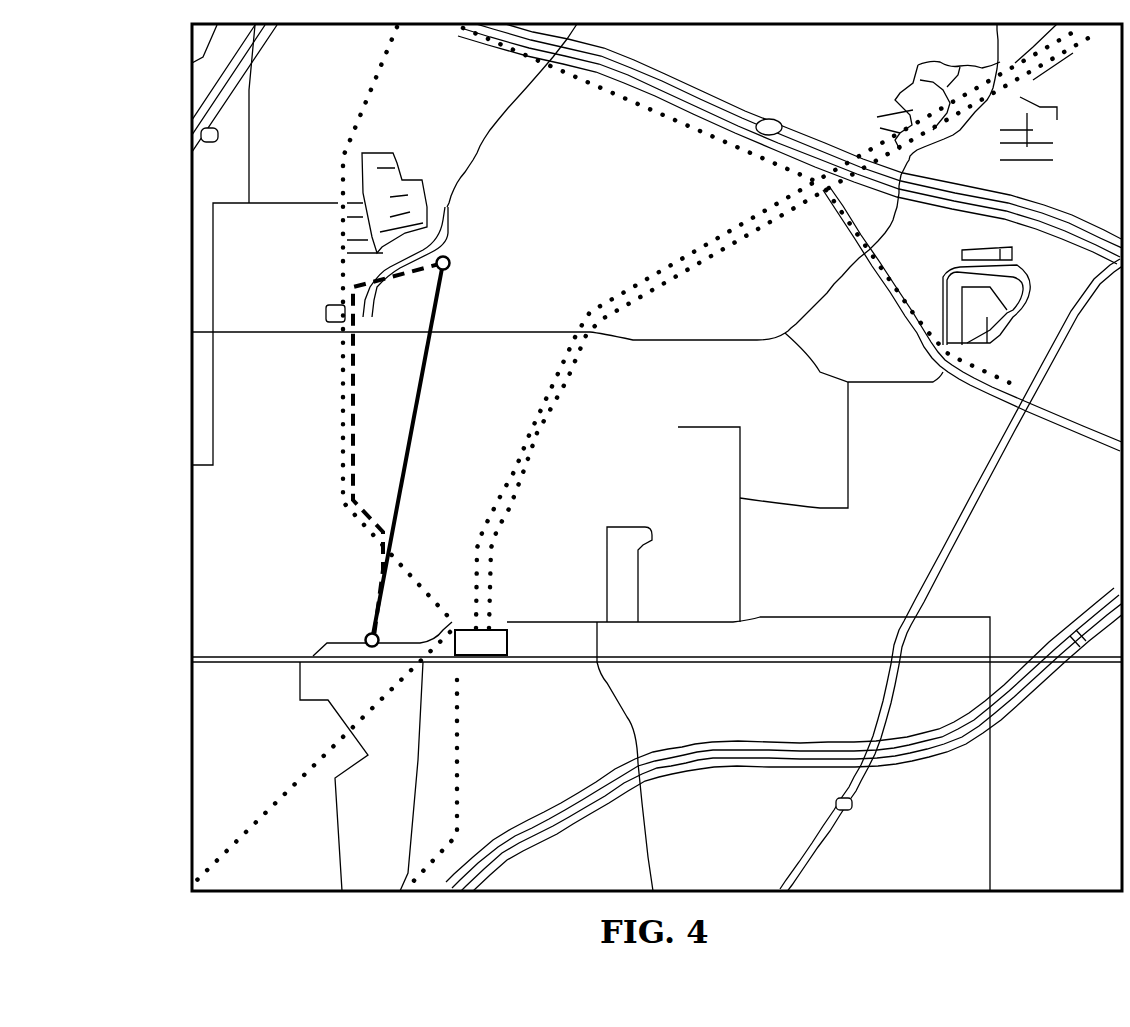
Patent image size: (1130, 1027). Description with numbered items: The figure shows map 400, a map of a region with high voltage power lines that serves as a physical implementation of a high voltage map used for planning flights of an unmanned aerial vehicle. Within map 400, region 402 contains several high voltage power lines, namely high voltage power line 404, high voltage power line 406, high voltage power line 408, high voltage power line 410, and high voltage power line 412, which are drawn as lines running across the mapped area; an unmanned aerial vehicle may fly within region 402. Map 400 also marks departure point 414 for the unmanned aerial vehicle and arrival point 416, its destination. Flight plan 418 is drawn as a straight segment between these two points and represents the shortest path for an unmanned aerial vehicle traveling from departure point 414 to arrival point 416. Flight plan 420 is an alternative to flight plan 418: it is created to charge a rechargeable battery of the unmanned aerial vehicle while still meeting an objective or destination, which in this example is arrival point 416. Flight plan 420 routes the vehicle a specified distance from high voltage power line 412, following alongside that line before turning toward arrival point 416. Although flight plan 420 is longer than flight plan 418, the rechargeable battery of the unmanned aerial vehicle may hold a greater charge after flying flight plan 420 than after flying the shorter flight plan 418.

The map 400 is at (146, 176).
The region 402 is at (617, 182).
The high voltage power line 404 is at (541, 395).
The high voltage power line 406 is at (543, 443).
The high voltage power line 408 is at (461, 738).
The high voltage power line 410 is at (299, 765).
The high voltage power line 412 is at (353, 122).
The departure point 414 is at (455, 252).
The arrival point 416 is at (364, 630).
The flight plan 418 is at (422, 412).
The flight plan 420 is at (360, 406).